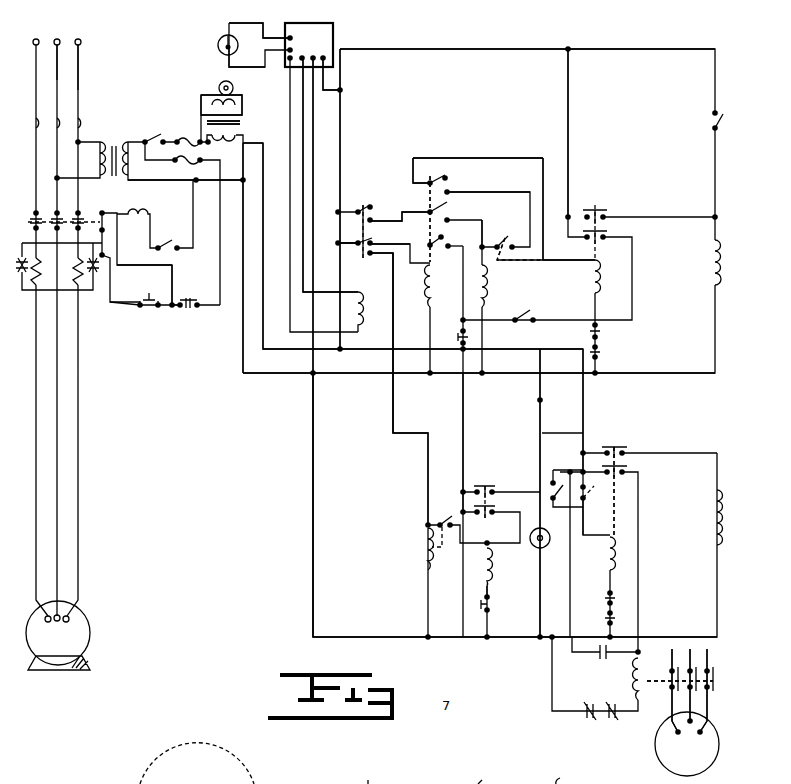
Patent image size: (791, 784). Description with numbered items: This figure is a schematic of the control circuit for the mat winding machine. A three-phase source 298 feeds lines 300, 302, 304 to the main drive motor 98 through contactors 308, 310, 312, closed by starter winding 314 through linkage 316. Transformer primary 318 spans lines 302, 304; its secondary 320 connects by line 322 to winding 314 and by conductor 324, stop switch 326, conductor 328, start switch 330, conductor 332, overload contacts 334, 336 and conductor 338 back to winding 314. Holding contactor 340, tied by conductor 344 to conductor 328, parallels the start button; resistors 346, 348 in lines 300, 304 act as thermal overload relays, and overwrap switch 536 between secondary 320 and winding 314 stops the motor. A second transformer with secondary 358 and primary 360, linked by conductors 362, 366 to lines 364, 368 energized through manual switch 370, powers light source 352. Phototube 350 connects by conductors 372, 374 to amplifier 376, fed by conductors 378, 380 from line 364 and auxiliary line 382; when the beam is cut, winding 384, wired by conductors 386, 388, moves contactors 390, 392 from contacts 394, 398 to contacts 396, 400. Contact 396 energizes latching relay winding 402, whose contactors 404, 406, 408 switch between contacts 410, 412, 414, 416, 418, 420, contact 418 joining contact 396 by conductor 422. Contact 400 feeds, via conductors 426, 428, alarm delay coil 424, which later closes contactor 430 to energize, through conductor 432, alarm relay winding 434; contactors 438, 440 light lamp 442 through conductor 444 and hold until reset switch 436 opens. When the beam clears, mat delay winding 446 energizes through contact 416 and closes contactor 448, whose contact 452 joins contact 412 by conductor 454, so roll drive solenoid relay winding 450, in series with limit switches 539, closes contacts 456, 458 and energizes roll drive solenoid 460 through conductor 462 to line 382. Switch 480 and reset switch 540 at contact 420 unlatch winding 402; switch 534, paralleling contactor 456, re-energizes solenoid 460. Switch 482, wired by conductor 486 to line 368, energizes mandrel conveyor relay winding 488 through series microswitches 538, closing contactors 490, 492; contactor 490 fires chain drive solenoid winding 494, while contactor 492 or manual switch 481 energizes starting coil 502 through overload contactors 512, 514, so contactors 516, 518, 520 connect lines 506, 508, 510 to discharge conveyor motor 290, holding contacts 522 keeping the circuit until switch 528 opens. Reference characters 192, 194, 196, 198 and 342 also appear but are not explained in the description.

The main drive motor 98 is at (100, 620).
The discharge conveyor motor 290 is at (719, 760).
The three-phase source of electrical energy 298 is at (79, 37).
The line 300 is at (36, 58).
The line 302 is at (57, 72).
The line 304 is at (78, 90).
The contactor 308 is at (30, 210).
The contactor 310 is at (74, 211).
The contactor 312 is at (102, 210).
The starter winding 314 is at (165, 183).
The linkage 316 is at (52, 210).
The primary winding 318 is at (107, 135).
The secondary winding 320 is at (130, 135).
The line 322 is at (185, 222).
The conductor 324 is at (188, 300).
The stop switch 326 is at (197, 310).
The conductor 328 is at (170, 310).
The start switch 330 is at (150, 296).
The conductor 332 is at (138, 310).
The normally closed contactor 334 is at (97, 290).
The normally closed contactor 336 is at (22, 290).
The conductor 338 is at (18, 246).
The holding contactor 340 is at (139, 212).
The holding contact line 342 is at (110, 258).
The conductor 344 is at (172, 268).
The resistor 346 is at (40, 290).
The resistor 348 is at (82, 300).
The phototube 350 is at (218, 40).
The light source 352 is at (233, 88).
The secondary winding 358 is at (240, 108).
The primary winding 360 is at (240, 132).
The conductor 362 is at (243, 173).
The line 364 is at (243, 378).
The conductor 366 is at (201, 100).
The line 368 is at (243, 141).
The manually operated switch 370 is at (162, 137).
The conductor 372 is at (258, 23).
The conductor 374 is at (229, 66).
The amplifier 376 is at (333, 34).
The conductor 378 is at (313, 137).
The conductor 380 is at (325, 80).
The auxiliary supply line 382 is at (340, 160).
The winding 384 is at (360, 333).
The conductor 386 is at (290, 292).
The conductor 388 is at (303, 243).
The contactor 390 is at (362, 202).
The contactor 392 is at (358, 247).
The contact 394 is at (374, 216).
The contact 396 is at (400, 214).
The contact 398 is at (374, 243).
The contact 400 is at (371, 257).
The latching relay winding 402 is at (430, 318).
The contactor 404 is at (430, 180).
The contactor 406 is at (447, 202).
The contactor 408 is at (428, 216).
The contact 410 is at (447, 177).
The contact 412 is at (460, 190).
The contact 414 is at (448, 216).
The contact 416 is at (470, 218).
The contact 418 is at (445, 240).
The contact 420 is at (448, 262).
The conductor 422 is at (351, 234).
The alarm delay relay coil 424 is at (424, 568).
The conductor 426 is at (410, 433).
The conductor 428 is at (313, 520).
The contactor 430 is at (436, 520).
The conductor 432 is at (470, 548).
The alarm relay winding 434 is at (492, 572).
The reset switch 436 is at (492, 606).
The contactor 438 is at (490, 485).
The contactor 440 is at (495, 508).
The lamp 442 is at (548, 542).
The conductor 444 is at (463, 445).
The mat delay relay winding 446 is at (490, 290).
The contactor 448 is at (503, 243).
The roll drive solenoid relay winding 450 is at (600, 290).
The contact 452 is at (502, 260).
The conductor 454 is at (530, 192).
The contactor 456 is at (605, 212).
The contact 458 is at (610, 237).
The roll drive solenoid 460 is at (725, 270).
The conductor 462 is at (568, 90).
The microswitch 480 is at (528, 312).
The switch 481 is at (553, 480).
The microswitch 482 is at (594, 485).
The conductor 486 is at (583, 410).
The mandrel conveyor relay winding 488 is at (618, 555).
The contactor 490 is at (615, 445).
The contactor 492 is at (630, 466).
The mandrel chain drive solenoid winding 494 is at (725, 528).
The starting coil 502 is at (640, 702).
The line 506 is at (672, 655).
The line 508 is at (690, 660).
The line 510 is at (707, 665).
The overload contactor 512 is at (590, 718).
The overload contactor 514 is at (612, 718).
The contactor 516 is at (700, 705).
The contactor 518 is at (712, 688).
The contactor 520 is at (718, 680).
The holding contacts 522 is at (600, 660).
The switch 528 is at (540, 400).
The switch 534 is at (722, 120).
The overwrap switch 536 is at (165, 243).
The microswitches 538 is at (615, 598).
The limit switches 539 is at (600, 333).
The control reset switch 540 is at (462, 329).
The part 192 is at (290, 783).
The part 194 is at (370, 774).
The part 196 is at (488, 774).
The part 198 is at (576, 773).